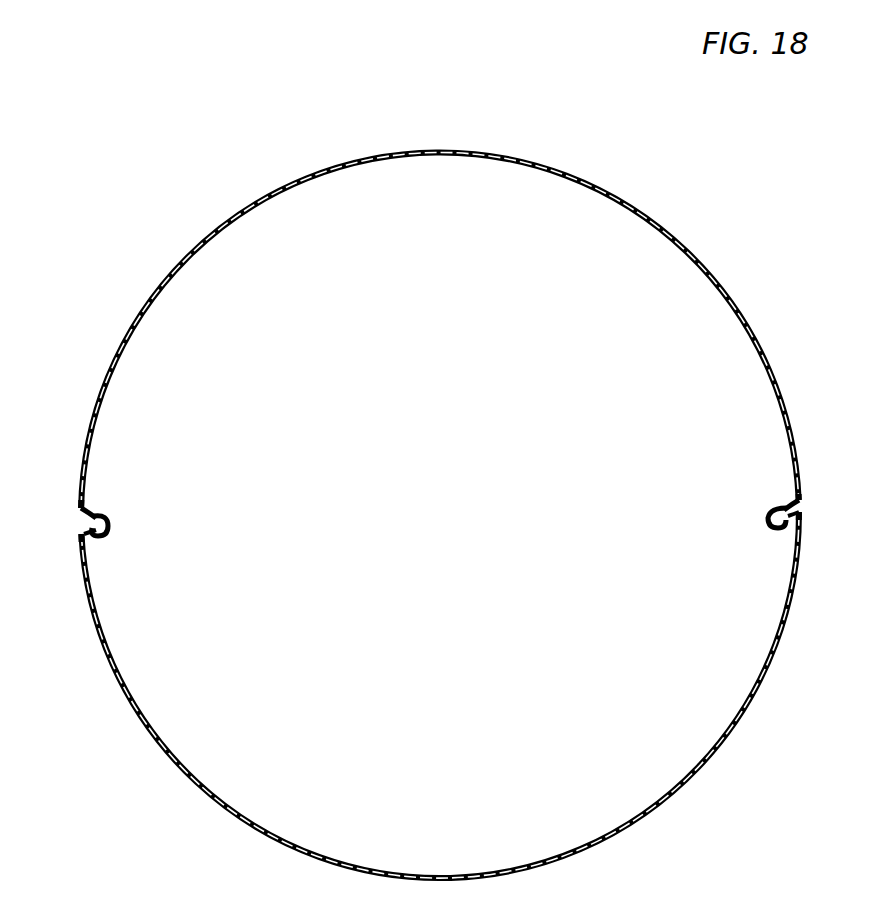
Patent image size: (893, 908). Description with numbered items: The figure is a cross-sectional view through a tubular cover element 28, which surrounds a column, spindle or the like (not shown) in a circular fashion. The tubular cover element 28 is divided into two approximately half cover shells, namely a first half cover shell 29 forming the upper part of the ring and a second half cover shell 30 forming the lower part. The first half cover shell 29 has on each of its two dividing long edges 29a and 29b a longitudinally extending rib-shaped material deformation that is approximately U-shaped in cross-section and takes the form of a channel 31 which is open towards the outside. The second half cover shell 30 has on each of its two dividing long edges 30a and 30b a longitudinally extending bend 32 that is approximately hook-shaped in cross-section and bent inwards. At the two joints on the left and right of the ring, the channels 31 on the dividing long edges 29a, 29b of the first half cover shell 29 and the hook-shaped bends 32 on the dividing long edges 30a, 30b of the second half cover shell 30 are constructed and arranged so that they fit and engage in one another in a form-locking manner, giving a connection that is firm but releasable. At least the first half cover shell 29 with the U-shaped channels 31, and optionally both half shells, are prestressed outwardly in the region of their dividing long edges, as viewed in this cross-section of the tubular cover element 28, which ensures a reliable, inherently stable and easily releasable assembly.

The tubular cover element 28 is at (440, 466).
The first half cover shell 29 is at (523, 158).
The second half cover shell 30 is at (200, 795).
The dividing long edge 29a is at (80, 502).
The dividing long edge 29b is at (800, 497).
The dividing long edge 30a is at (82, 536).
The dividing long edge 30b is at (801, 514).
The channel 31 is at (82, 512).
The bend 32 is at (100, 516).